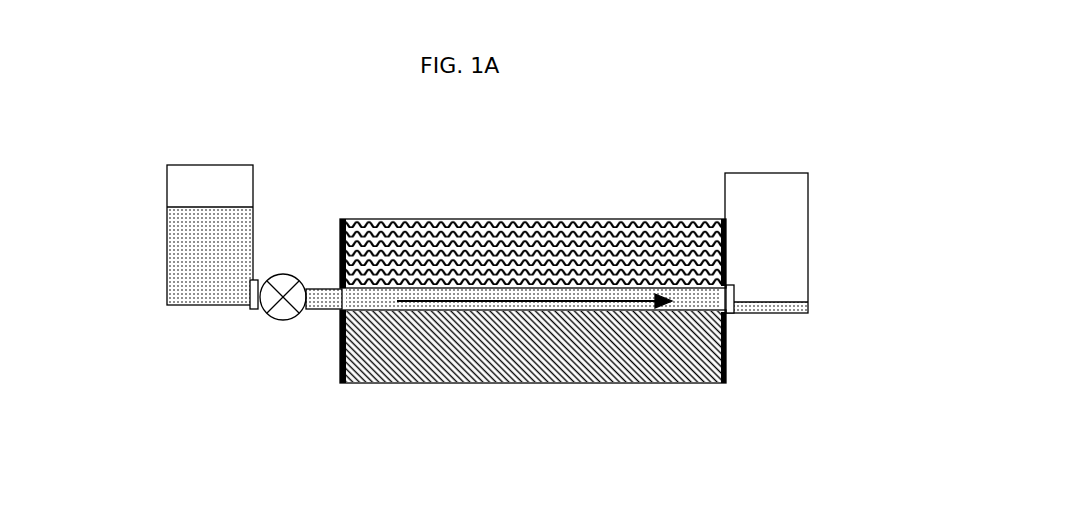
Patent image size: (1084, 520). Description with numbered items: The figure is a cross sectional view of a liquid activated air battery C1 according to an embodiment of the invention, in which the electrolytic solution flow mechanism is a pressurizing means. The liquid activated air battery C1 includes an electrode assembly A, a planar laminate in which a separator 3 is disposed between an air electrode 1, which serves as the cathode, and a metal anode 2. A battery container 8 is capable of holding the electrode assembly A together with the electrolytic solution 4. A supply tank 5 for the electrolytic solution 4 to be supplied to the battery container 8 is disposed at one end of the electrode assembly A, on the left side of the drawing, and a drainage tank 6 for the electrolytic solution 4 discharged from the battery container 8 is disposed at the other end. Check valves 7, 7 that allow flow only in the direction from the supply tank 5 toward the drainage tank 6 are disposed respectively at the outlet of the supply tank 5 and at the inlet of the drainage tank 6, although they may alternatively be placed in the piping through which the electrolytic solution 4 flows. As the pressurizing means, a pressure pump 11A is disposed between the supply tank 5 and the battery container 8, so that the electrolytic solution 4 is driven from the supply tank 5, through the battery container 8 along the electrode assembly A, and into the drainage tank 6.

The air electrode 1 is at (382, 232).
The metal anode 2 is at (382, 370).
The separator 3 is at (676, 310).
The electrolytic solution 4 is at (197, 287).
The supply tank 5 is at (202, 180).
The drainage tank 6 is at (790, 192).
The check valve 7 is at (253, 312).
The battery container 8 is at (340, 250).
The pressure pump 11A is at (302, 322).
The electrode assembly A is at (528, 220).
The liquid activated air battery C1 is at (670, 204).